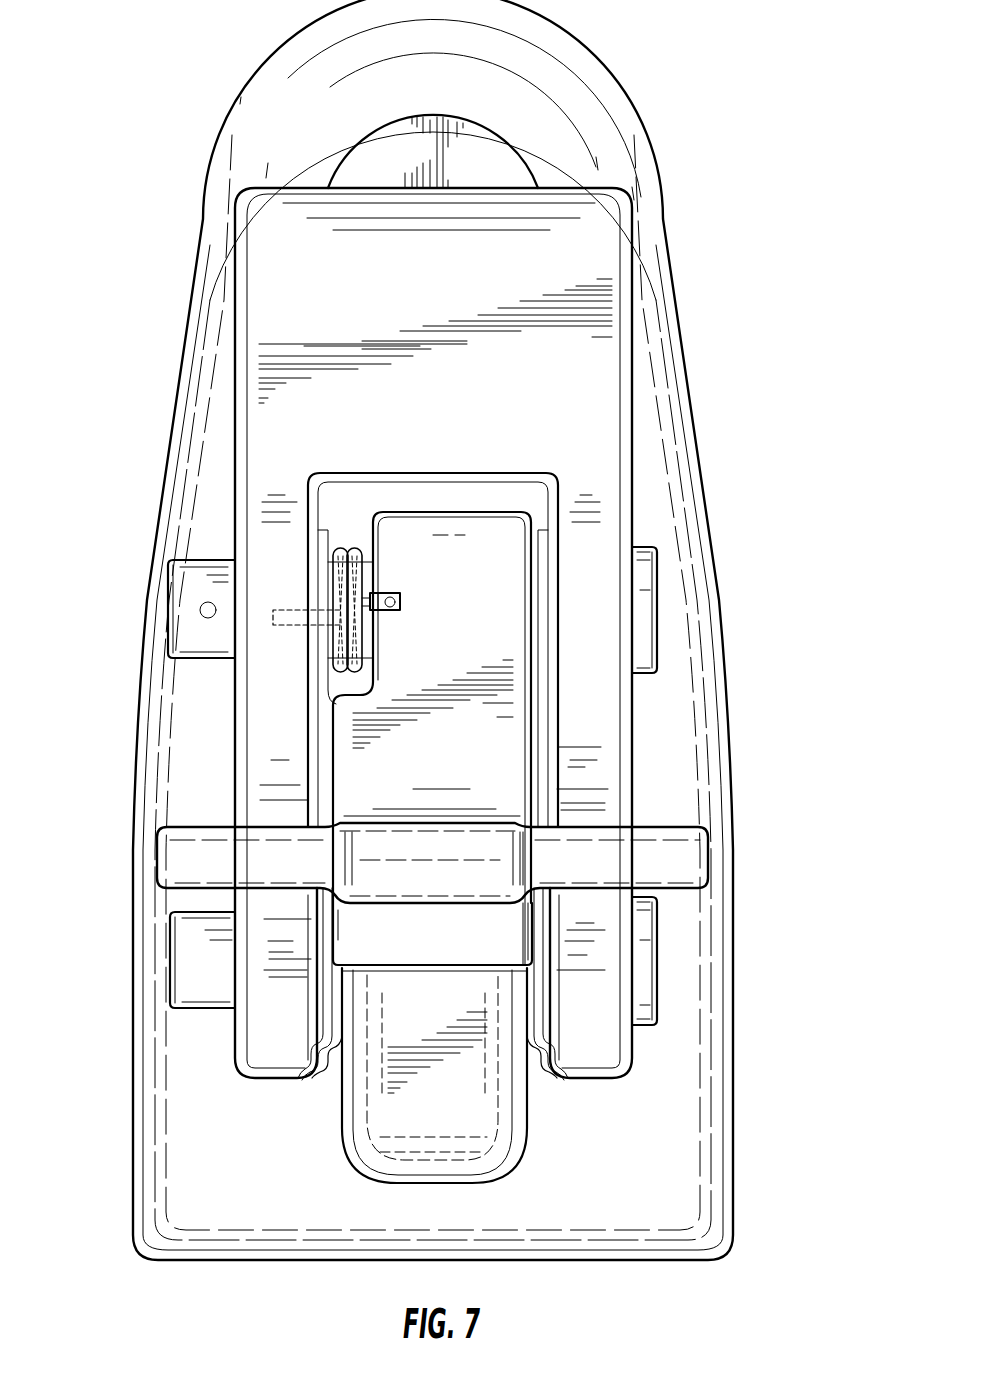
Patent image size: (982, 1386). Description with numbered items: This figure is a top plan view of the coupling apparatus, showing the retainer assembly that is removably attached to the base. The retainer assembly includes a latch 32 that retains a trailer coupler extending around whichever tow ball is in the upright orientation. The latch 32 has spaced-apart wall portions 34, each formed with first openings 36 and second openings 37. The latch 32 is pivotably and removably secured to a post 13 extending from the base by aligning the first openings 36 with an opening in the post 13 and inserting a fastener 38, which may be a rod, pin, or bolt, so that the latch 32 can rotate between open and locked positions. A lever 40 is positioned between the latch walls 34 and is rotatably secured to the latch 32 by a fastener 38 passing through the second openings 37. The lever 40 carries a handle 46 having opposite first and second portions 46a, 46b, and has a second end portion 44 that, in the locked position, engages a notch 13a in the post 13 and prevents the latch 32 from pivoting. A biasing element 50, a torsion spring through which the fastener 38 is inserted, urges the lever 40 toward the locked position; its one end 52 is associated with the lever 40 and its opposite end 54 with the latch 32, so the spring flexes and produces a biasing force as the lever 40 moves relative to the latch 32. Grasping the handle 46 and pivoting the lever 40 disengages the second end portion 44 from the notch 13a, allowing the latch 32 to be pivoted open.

The post 13 is at (482, 1123).
The notch 13a is at (418, 965).
The latch 32 is at (590, 413).
The wall portions 34 is at (287, 1047).
The first openings 36 is at (232, 982).
The second openings 37 is at (207, 585).
The fastener 38 is at (645, 600).
The lever 40 is at (347, 728).
The second end portion 44 is at (502, 965).
The handle 46 is at (439, 842).
The first portion 46a is at (673, 827).
The second portion 46b is at (188, 860).
The biasing element 50 is at (351, 548).
The one end 52 is at (390, 592).
The opposite end 54 is at (292, 608).